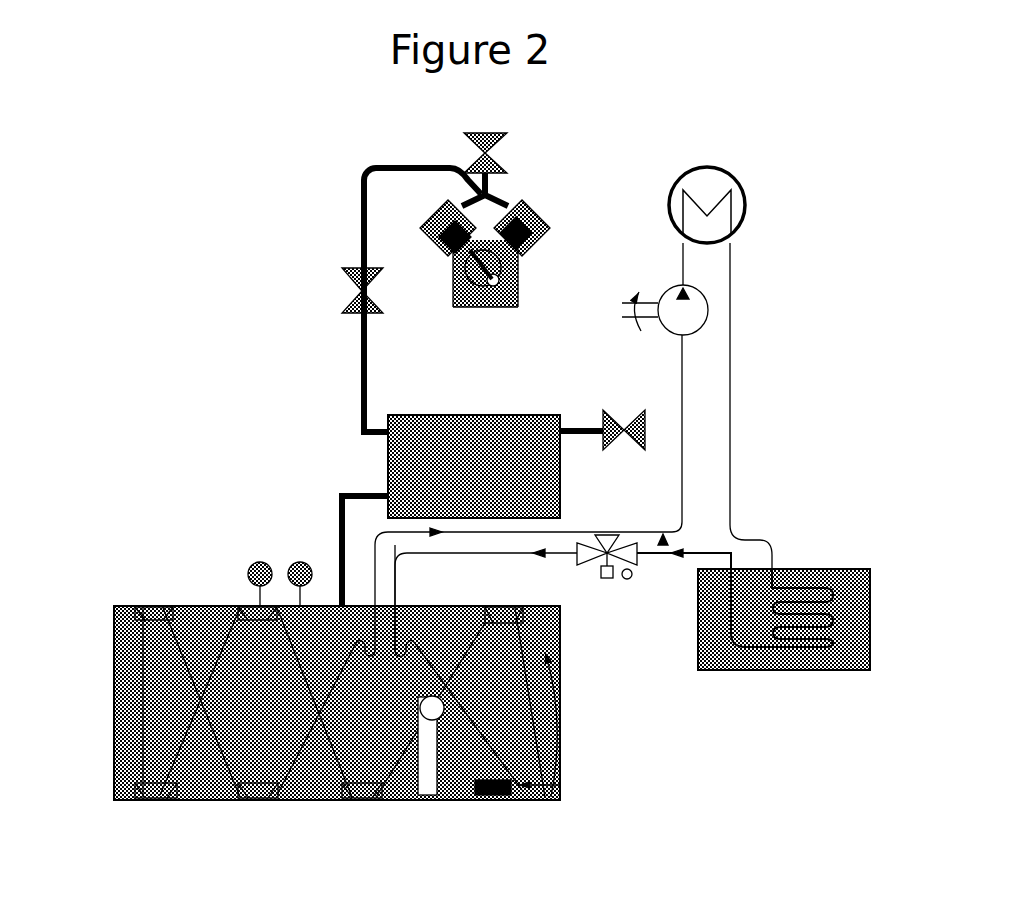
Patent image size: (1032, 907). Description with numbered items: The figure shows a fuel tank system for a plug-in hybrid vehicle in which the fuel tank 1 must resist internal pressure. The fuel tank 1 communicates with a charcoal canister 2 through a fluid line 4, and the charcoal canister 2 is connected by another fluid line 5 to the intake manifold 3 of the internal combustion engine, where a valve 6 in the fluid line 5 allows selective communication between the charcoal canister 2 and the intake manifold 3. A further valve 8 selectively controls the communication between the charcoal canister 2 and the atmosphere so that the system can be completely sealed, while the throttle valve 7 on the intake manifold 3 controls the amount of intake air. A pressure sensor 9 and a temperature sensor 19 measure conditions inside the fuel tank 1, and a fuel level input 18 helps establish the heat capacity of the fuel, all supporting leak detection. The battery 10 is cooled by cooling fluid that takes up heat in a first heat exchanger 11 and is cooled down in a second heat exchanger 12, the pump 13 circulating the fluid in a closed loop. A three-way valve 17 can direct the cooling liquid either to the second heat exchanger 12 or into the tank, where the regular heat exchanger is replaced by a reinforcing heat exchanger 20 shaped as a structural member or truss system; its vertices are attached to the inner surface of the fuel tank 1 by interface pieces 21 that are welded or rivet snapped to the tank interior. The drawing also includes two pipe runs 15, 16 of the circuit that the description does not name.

The fuel tank 1 is at (167, 602).
The charcoal canister 2 is at (384, 464).
The intake manifold 3 is at (509, 187).
The fluid line 4 is at (334, 544).
The fluid line 5 is at (354, 208).
The valve 6 is at (342, 295).
The throttle valve 7 is at (467, 151).
The valve 8 is at (586, 415).
The pressure sensor 9 is at (246, 562).
The battery 10 is at (693, 627).
The first heat exchanger 11 is at (788, 652).
The second heat exchanger 12 is at (744, 237).
The pump 13 is at (656, 281).
The pipe 15 is at (739, 409).
The circulation line 16 is at (574, 567).
The three-way valve 17 is at (644, 517).
The fuel level input 18 is at (455, 754).
The temperature sensor 19 is at (287, 556).
The reinforcing heat exchanger 20 is at (135, 709).
The interface piece 21 is at (350, 811).